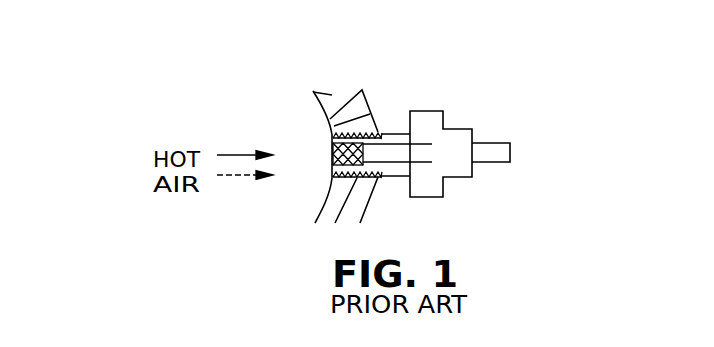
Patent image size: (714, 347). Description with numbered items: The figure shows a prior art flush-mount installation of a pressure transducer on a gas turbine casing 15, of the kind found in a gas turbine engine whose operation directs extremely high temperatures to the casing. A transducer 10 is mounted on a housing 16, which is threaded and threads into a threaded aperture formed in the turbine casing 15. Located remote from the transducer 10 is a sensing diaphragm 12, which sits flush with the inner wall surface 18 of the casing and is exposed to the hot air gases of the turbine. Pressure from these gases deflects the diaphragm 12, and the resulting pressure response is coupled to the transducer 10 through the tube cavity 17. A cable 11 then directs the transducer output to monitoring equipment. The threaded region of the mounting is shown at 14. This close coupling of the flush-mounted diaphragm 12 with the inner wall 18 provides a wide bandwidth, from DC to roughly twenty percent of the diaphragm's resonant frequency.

The transducer 10 is at (473, 108).
The cable 11 is at (511, 148).
The sensing diaphragm 12 is at (378, 133).
The threaded bore 14 is at (378, 177).
The gas turbine casing 15 is at (320, 116).
The housing 16 is at (428, 117).
The tube cavity 17 is at (402, 152).
The inner wall surface 18 is at (325, 193).